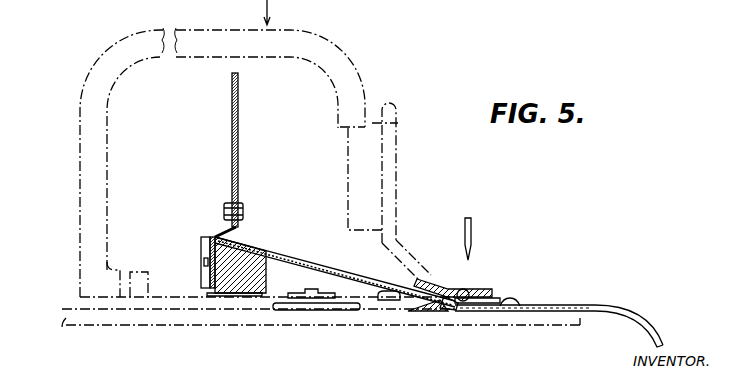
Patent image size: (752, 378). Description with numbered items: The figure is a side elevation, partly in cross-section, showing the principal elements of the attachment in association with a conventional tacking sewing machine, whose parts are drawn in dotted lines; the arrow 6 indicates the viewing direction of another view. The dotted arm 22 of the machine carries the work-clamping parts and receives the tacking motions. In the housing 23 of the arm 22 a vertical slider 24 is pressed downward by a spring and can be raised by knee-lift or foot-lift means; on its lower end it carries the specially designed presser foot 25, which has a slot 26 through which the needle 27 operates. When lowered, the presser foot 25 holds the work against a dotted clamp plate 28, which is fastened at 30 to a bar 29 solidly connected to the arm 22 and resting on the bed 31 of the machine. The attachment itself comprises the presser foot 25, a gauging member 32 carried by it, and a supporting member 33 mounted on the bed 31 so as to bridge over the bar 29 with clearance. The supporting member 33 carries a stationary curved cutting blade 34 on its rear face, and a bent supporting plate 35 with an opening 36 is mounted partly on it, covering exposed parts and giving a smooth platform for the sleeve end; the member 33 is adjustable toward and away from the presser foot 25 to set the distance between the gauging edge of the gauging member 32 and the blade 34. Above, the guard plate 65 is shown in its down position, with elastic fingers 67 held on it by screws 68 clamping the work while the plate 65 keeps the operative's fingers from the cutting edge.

The direction arrow 6 is at (276, 12).
The arm 22 is at (85, 92).
The housing 23 is at (360, 172).
The vertical slider 24 is at (383, 173).
The presser foot 25 is at (455, 290).
The slot 26 is at (470, 289).
The needle 27 is at (476, 230).
The clamp plate 28 is at (453, 311).
The bar 29 is at (360, 312).
The fastening 30 is at (384, 312).
The bed 31 is at (195, 315).
The gauging member 32 is at (506, 299).
The supporting member 33 is at (235, 293).
The stationary curved cutting blade 34 is at (204, 247).
The bent supporting plate 35 is at (323, 268).
The opening 36 is at (432, 313).
The guard plate 65 is at (240, 148).
The elastic fingers 67 is at (222, 232).
The screws 68 is at (244, 207).